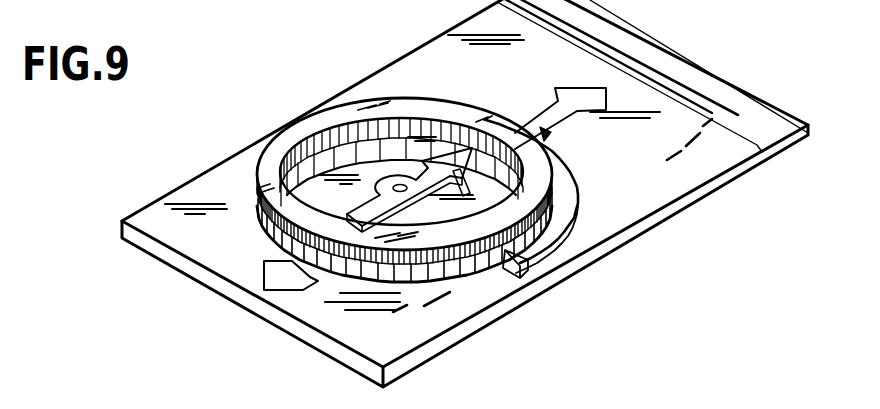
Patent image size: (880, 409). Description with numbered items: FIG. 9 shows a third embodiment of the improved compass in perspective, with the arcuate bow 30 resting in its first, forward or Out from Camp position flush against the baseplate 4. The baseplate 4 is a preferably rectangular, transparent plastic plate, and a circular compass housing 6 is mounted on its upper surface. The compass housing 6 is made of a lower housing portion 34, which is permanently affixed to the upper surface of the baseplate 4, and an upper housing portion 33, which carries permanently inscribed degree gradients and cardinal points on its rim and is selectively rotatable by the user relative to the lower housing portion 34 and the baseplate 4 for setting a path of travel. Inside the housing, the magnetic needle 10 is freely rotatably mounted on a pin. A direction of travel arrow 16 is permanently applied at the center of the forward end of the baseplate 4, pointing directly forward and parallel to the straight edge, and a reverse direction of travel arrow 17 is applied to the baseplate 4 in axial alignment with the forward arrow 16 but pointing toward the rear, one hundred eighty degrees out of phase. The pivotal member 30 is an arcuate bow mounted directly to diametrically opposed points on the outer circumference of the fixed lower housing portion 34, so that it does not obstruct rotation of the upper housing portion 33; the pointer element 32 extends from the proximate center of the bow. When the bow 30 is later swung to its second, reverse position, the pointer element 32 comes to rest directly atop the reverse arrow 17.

The baseplate 4 is at (682, 176).
The compass housing 6 is at (283, 189).
The magnetic needle 10 is at (470, 150).
The direction of travel arrow 16 is at (572, 88).
The reverse direction of travel arrow 17 is at (266, 260).
The pivotal member 30 is at (583, 196).
The pointer element 32 is at (551, 137).
The upper housing portion 33 is at (356, 104).
The lower housing portion 34 is at (345, 273).